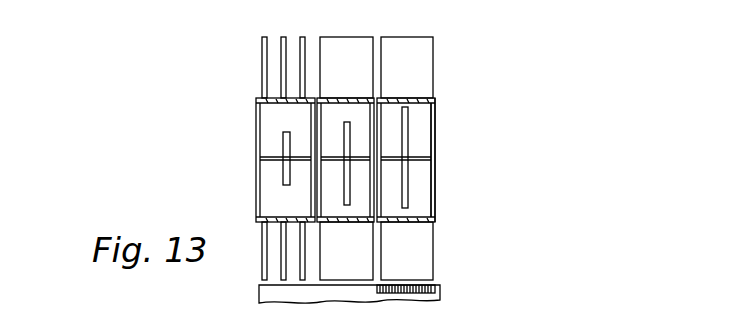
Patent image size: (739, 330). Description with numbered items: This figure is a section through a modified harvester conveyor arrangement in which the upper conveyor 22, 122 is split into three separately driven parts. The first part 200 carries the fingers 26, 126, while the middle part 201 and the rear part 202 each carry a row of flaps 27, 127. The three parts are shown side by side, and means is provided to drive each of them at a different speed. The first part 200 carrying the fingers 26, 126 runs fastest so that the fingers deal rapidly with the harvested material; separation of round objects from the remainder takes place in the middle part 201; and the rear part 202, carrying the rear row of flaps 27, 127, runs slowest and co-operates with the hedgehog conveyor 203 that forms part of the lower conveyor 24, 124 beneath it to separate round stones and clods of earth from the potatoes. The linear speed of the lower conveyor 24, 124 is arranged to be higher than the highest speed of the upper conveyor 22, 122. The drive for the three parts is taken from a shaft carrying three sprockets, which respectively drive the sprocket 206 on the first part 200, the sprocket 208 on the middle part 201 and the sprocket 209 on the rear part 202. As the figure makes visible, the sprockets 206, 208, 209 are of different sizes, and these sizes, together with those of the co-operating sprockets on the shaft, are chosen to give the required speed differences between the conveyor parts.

The fingers 26 is at (240, 158).
The fingers 126 is at (304, 70).
The flaps 27 is at (414, 158).
The flaps 127 is at (362, 50).
The first part 200 is at (280, 122).
The middle part 201 is at (360, 132).
The rear part 202 is at (422, 121).
The upper conveyor 22 is at (477, 160).
The upper conveyor 122 is at (437, 172).
The sprocket 206 is at (285, 172).
The sprocket 208 is at (344, 137).
The sprocket 209 is at (407, 197).
The hedgehog conveyor 203 is at (418, 288).
The lower conveyor 24 is at (295, 296).
The lower conveyor 124 is at (262, 293).